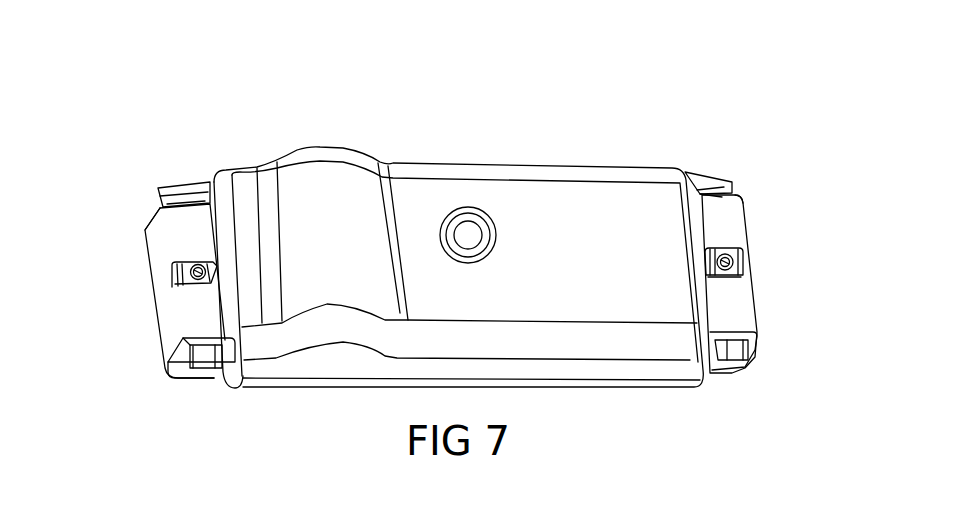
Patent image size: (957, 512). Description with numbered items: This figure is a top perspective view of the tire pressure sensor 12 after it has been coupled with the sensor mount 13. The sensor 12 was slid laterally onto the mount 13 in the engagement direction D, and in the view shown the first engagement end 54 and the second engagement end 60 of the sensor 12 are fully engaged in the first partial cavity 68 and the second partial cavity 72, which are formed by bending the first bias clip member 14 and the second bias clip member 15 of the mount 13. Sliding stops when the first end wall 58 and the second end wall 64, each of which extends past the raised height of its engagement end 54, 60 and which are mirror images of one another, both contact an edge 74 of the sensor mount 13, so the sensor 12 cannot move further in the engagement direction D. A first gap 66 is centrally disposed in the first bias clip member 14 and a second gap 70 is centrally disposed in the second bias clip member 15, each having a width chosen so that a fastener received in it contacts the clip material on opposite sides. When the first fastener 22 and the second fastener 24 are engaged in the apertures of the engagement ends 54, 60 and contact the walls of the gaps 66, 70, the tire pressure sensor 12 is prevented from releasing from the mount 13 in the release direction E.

The tire pressure sensor 12 is at (533, 195).
The sensor mount 13 is at (757, 198).
The first bias clip member 14 is at (190, 217).
The second bias clip member 15 is at (742, 310).
The first fastener 22 is at (175, 284).
The second fastener 24 is at (728, 256).
The first engagement end 54 is at (203, 357).
The first end wall 58 is at (173, 192).
The second engagement end 60 is at (726, 343).
The second end wall 64 is at (705, 178).
The first gap 66 is at (210, 286).
The first partial cavity 68 is at (167, 377).
The second gap 70 is at (746, 270).
The second partial cavity 72 is at (727, 375).
The edge 74 is at (148, 213).
The engagement direction D is at (154, 72).
The release direction E is at (206, 408).